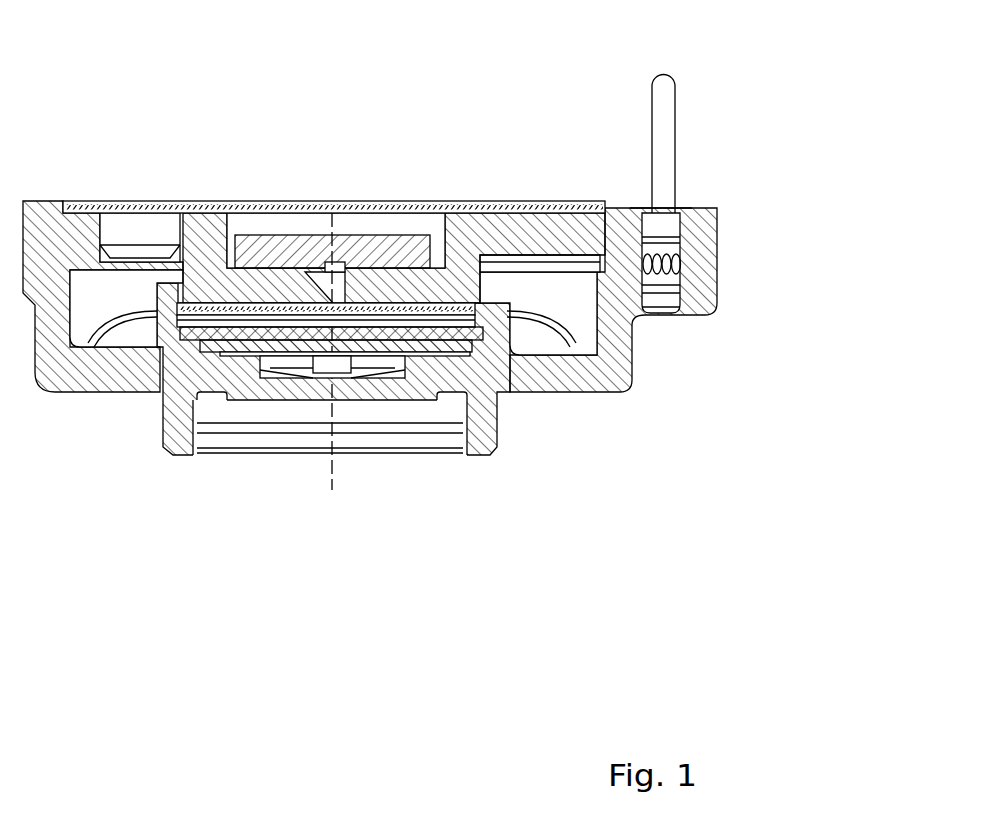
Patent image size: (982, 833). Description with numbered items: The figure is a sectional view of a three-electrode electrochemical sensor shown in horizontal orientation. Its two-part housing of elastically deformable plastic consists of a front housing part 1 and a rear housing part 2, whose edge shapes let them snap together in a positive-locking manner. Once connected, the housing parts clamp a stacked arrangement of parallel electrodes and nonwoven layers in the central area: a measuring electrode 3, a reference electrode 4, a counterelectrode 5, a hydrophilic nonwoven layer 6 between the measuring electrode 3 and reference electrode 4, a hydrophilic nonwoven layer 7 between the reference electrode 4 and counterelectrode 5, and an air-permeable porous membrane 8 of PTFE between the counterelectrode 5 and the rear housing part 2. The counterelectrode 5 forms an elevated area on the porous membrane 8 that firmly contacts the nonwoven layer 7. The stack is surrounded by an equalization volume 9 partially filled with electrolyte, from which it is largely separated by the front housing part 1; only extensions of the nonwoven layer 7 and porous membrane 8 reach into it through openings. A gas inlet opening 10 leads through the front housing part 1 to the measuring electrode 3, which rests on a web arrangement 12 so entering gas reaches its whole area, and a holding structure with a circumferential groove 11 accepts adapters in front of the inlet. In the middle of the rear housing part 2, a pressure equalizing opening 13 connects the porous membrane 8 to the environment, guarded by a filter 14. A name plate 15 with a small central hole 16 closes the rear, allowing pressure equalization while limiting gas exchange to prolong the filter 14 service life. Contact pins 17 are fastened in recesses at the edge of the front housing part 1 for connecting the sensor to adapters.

The front housing part 1 is at (703, 236).
The rear housing part 2 is at (552, 228).
The measuring electrode 3 is at (270, 352).
The reference electrode 4 is at (442, 350).
The counterelectrode 5 is at (245, 354).
The hydrophilic nonwoven layer 6 is at (308, 373).
The hydrophilic nonwoven layer 7 is at (471, 352).
The porous membrane 8 is at (163, 447).
The equalization volume 9 is at (575, 318).
The gas inlet opening 10 is at (345, 378).
The circumferential groove 11 is at (231, 437).
The web arrangement 12 is at (372, 368).
The pressure equalizing opening 13 is at (343, 280).
The filter 14 is at (253, 245).
The name plate 15 is at (124, 207).
The central hole 16 is at (332, 213).
The contact pins 17 is at (667, 103).